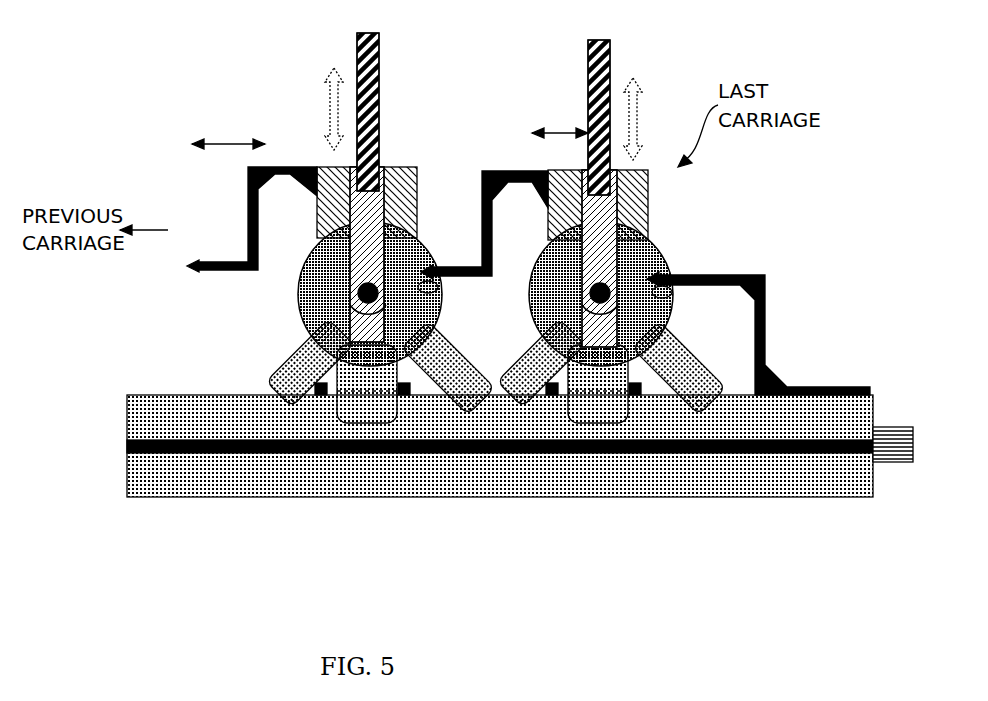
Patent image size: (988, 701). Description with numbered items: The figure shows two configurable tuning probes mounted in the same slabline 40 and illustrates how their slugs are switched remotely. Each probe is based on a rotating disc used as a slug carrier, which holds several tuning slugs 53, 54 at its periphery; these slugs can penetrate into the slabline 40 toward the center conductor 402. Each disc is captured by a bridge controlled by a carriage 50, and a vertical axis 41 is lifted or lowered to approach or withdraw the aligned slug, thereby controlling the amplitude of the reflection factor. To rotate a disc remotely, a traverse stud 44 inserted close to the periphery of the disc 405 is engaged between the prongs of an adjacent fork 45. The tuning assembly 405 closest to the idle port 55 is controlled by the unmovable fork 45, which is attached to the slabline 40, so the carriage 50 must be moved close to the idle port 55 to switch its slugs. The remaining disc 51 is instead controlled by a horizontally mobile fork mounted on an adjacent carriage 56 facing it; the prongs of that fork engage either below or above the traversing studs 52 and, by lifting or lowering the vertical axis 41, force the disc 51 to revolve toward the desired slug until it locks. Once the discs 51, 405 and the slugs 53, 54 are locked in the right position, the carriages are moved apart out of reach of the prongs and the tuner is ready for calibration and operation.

The slabline 40 is at (158, 395).
The center conductor 402 is at (447, 453).
The vertical axis 41 is at (588, 117).
The traverse stud 44 is at (672, 294).
The fork 45 is at (725, 275).
The carriage 50 is at (553, 168).
The disc (tuning assembly) 51 is at (297, 287).
The traversing stud 52 is at (438, 288).
The tuning slug 53 is at (280, 390).
The tuning slug 54 is at (343, 423).
The idle port 55 is at (890, 467).
The carriage (with fork) 56 is at (295, 166).
The rotating disc (slug carrier) 405 is at (665, 258).